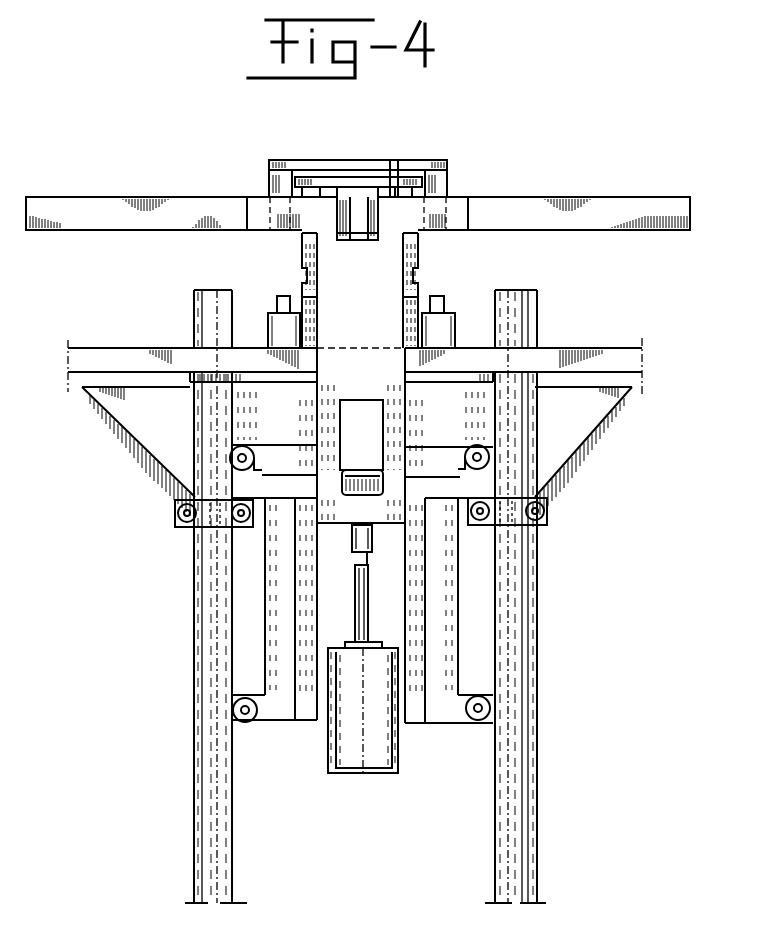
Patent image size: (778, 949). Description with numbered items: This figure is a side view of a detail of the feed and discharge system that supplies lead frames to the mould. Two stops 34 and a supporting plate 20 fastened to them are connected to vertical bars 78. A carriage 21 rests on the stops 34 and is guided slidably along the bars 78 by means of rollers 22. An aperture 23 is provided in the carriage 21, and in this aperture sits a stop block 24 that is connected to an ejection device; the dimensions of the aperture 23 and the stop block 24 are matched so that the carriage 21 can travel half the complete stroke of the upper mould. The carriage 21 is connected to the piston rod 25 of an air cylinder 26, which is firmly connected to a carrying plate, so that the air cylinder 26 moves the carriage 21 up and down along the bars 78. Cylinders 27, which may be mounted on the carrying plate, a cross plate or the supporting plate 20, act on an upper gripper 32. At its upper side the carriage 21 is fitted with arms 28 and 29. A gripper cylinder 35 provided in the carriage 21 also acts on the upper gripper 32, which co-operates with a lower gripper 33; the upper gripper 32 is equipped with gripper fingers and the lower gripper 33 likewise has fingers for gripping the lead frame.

The supporting plate 20 is at (127, 368).
The carriage 21 is at (370, 372).
The rollers 22 is at (240, 718).
The aperture 23 is at (370, 445).
The stop block 24 is at (372, 490).
The piston rod 25 is at (363, 623).
The air cylinder 26 is at (362, 765).
The cylinders 27 is at (277, 323).
The arm 28 is at (78, 210).
The arm 29 is at (630, 210).
The upper gripper 32 is at (343, 165).
The lower gripper 33 is at (368, 185).
The stops 34 is at (178, 508).
The gripper cylinder 35 is at (335, 235).
The bars 78 is at (205, 868).